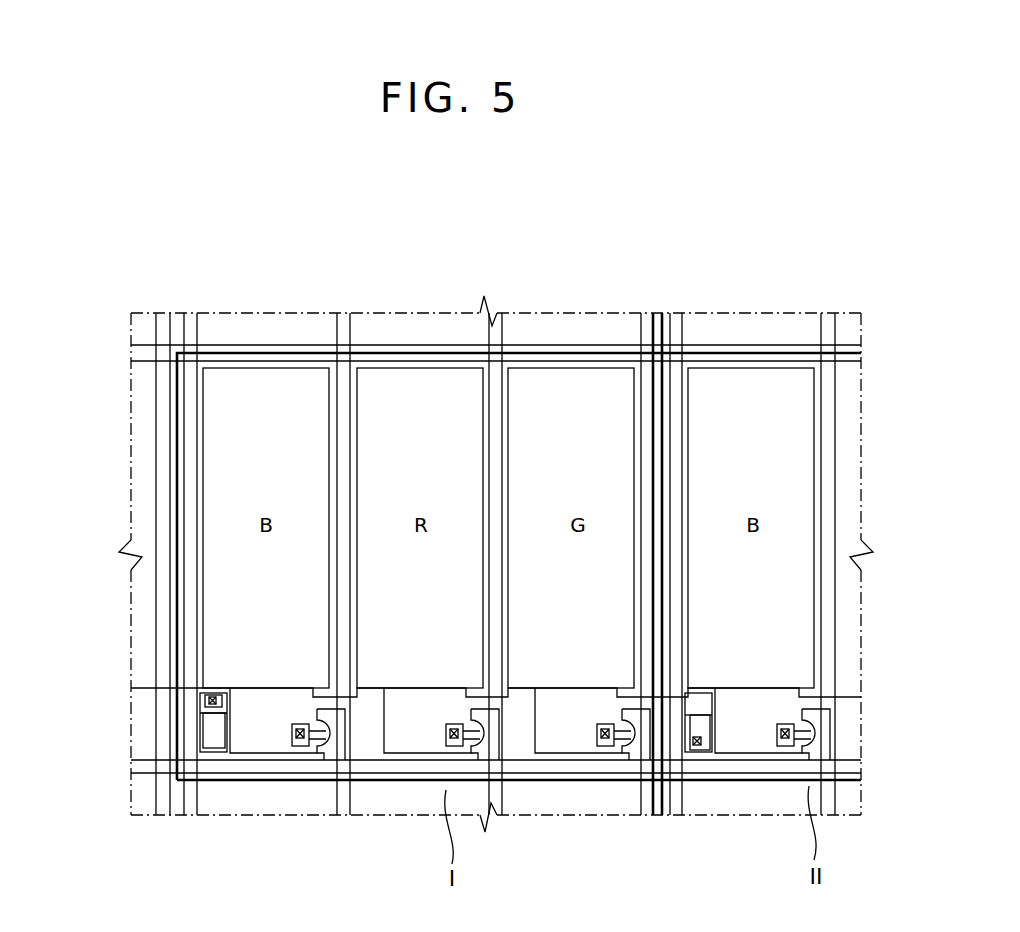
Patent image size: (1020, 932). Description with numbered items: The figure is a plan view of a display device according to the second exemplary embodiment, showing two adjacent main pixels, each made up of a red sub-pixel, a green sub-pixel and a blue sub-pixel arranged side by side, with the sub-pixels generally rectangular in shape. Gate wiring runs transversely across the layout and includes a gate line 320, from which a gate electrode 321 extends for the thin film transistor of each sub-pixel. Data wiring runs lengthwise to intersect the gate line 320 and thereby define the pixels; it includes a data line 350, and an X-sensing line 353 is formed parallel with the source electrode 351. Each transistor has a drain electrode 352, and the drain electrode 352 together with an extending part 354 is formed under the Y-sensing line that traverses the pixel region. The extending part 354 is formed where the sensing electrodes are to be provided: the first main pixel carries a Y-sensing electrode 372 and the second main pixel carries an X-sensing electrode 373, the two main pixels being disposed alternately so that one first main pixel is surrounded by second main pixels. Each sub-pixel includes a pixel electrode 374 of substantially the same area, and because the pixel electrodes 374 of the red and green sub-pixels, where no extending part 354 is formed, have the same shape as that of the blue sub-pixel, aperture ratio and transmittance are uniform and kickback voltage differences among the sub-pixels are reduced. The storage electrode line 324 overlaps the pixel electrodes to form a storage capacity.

The gate line 320 is at (146, 353).
The gate electrode 321 is at (316, 760).
The storage line 324 is at (140, 689).
The data line 350 is at (345, 322).
The source electrode 351 is at (333, 754).
The drain electrode 352 is at (300, 746).
The X-sensing line 353 is at (193, 322).
The extending part 354 is at (204, 728).
The Y-sensing electrode 372 is at (214, 753).
The X-sensing electrode 373 is at (697, 753).
The pixel electrode 374 is at (359, 410).